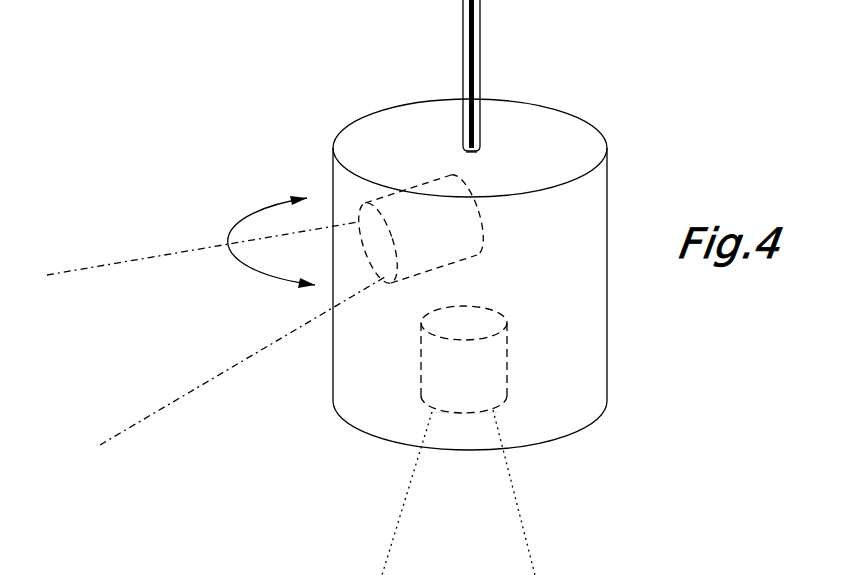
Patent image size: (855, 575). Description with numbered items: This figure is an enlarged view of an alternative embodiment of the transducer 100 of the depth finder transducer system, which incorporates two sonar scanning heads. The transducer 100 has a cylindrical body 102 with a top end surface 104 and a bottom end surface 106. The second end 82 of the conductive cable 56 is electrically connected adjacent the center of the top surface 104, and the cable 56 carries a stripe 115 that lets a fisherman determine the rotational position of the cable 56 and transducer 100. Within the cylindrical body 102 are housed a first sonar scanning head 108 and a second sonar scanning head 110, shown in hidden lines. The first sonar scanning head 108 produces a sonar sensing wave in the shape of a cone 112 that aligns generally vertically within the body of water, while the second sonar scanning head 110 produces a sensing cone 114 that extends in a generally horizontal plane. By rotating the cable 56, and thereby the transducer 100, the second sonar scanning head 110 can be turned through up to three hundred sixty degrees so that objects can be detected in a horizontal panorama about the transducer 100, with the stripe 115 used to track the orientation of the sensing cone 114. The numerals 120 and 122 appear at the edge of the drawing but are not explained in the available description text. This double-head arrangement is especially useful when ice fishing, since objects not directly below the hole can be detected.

The transducer 100 is at (594, 113).
The cylindrical body 102 is at (610, 184).
The top end surface 104 is at (407, 123).
The bottom end surface 106 is at (475, 150).
The first sonar scanning head 108 is at (507, 365).
The second sonar scanning head 110 is at (428, 176).
The sonar sensing cone 112 is at (520, 512).
The sonar sensing cone 114 is at (150, 258).
The stripe 115 is at (462, 15).
The conductive cable 56 is at (480, 20).
The second end of the conductive cable 82 is at (477, 137).
The target 120 is at (742, 567).
The detector 122 is at (827, 563).